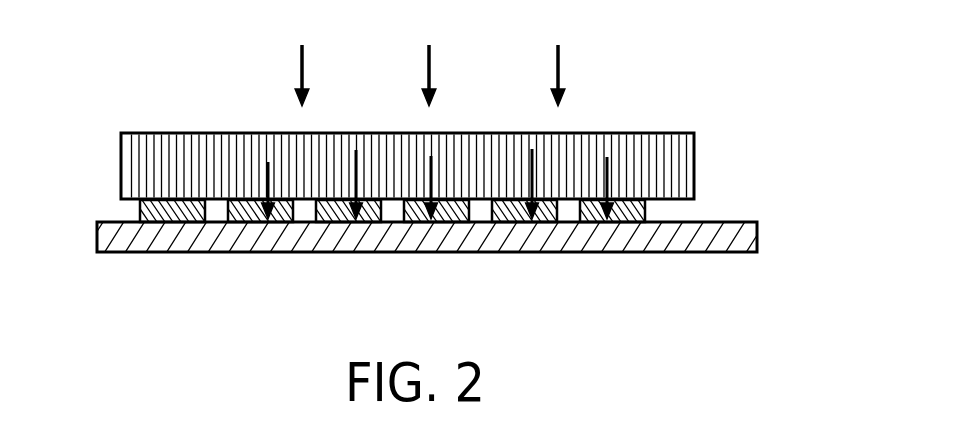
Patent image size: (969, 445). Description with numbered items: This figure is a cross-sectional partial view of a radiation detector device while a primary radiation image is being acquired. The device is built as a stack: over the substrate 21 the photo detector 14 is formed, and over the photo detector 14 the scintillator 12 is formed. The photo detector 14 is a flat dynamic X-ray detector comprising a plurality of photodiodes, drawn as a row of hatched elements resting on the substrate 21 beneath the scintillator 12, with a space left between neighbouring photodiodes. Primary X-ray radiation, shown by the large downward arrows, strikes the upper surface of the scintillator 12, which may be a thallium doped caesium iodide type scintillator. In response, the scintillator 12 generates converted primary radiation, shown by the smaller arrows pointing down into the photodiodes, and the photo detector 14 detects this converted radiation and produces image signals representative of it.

The scintillator 12 is at (146, 133).
The photo detector 14 is at (347, 246).
The substrate 21 is at (758, 237).